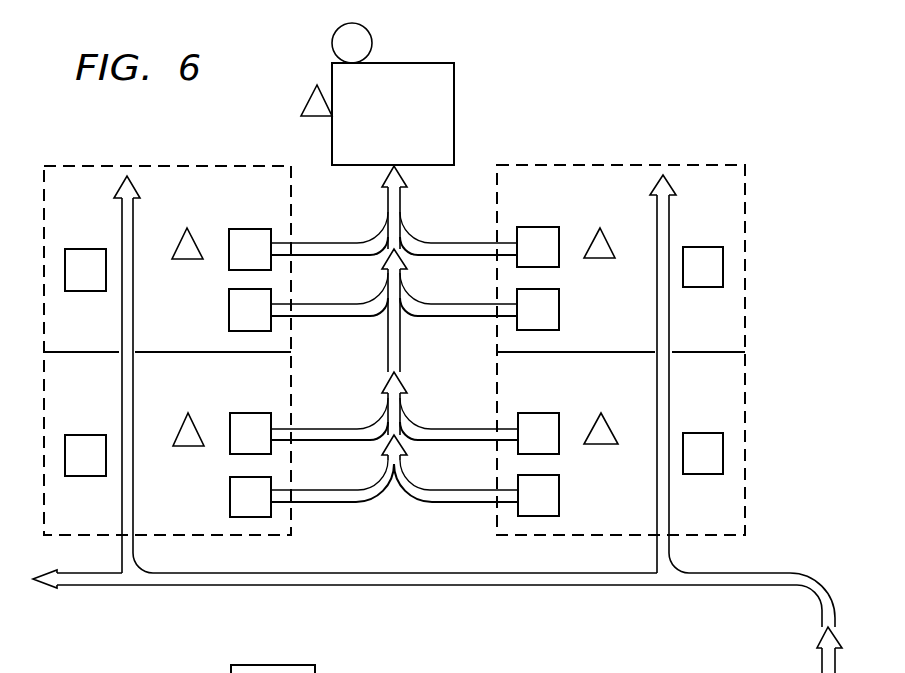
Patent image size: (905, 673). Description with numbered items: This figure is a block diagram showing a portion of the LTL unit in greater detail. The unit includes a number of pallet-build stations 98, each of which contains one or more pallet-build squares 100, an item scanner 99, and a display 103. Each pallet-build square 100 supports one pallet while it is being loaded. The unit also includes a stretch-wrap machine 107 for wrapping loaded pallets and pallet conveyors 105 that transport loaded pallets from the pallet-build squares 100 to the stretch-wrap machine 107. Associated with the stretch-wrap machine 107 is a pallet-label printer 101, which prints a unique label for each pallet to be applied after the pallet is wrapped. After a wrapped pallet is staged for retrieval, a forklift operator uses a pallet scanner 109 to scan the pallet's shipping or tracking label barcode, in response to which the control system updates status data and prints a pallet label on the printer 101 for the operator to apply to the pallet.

The pallet-build station 98 is at (620, 165).
The item scanner 99 is at (176, 244).
The pallet-build square 100 is at (252, 229).
The pallet-label printer 101 is at (332, 44).
The display 103 is at (82, 249).
The pallet conveyor 105 is at (400, 352).
The stretch-wrap machine 107 is at (454, 114).
The pallet scanner 109 is at (305, 103).